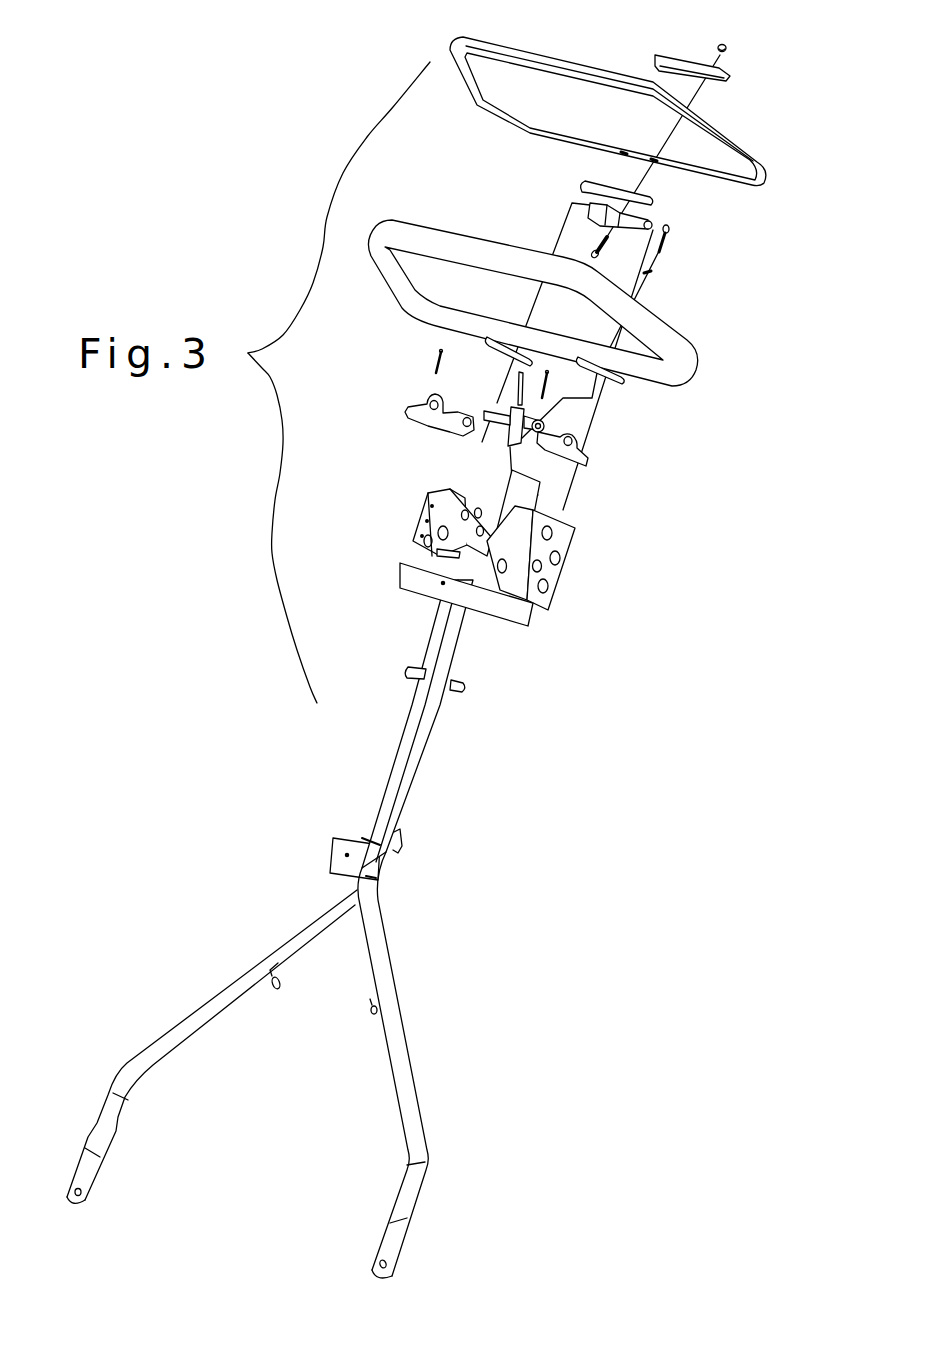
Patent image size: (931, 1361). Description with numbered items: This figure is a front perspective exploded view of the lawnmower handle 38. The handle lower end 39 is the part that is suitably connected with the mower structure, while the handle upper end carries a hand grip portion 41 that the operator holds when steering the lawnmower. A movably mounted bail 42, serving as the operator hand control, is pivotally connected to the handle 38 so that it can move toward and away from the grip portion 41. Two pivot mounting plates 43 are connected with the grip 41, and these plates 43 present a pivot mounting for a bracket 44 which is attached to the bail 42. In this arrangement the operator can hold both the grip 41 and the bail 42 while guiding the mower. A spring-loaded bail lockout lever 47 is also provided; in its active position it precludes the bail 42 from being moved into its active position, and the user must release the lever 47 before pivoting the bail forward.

The handle 38 is at (397, 750).
The handle lower end 39 is at (373, 1257).
The hand grip portion 41 is at (667, 341).
The bail 42 is at (530, 138).
The pivot mounting plates 43 is at (565, 457).
The bracket 44 is at (651, 198).
The bail lockout lever 47 is at (507, 390).